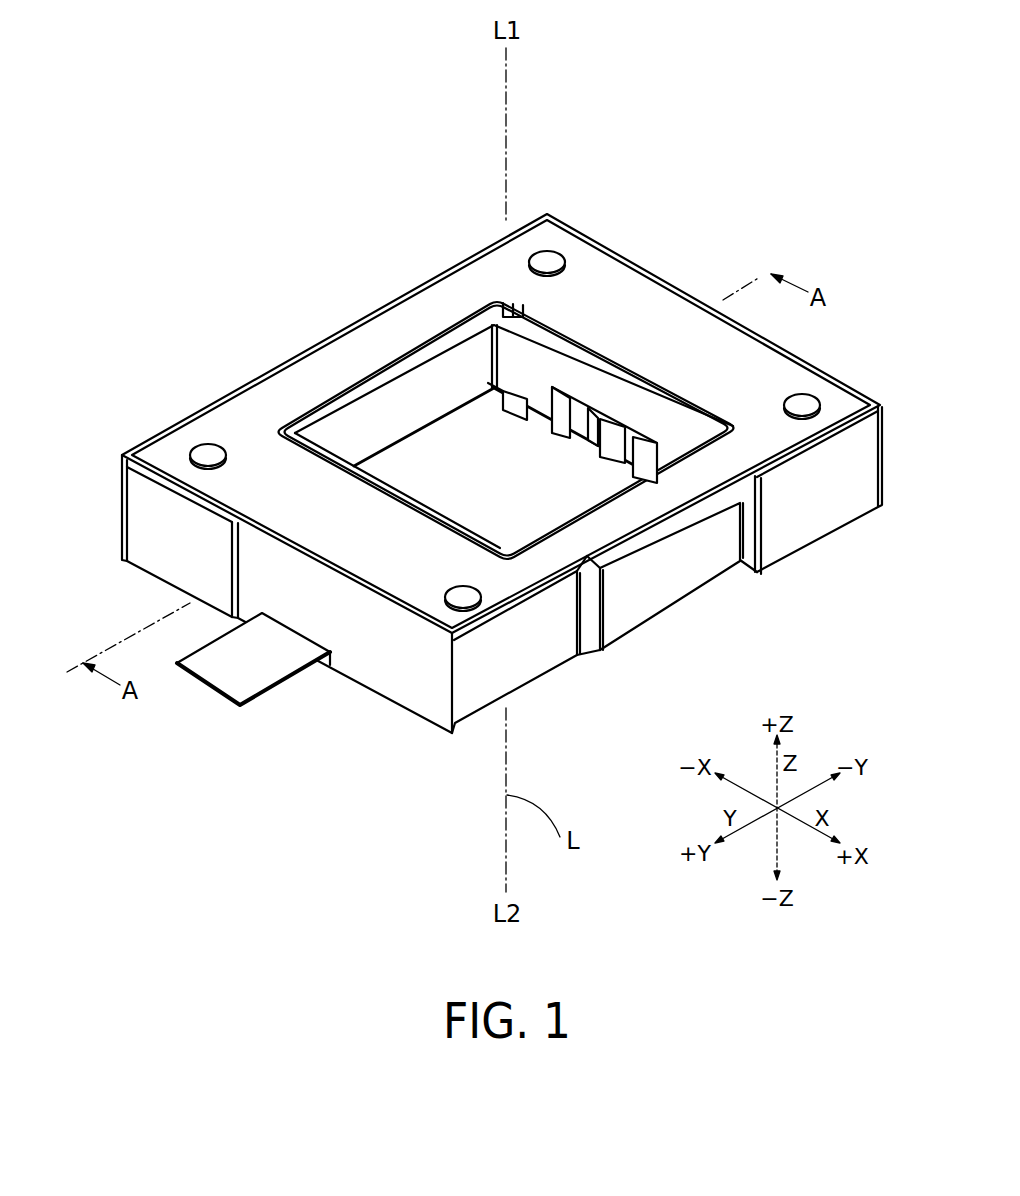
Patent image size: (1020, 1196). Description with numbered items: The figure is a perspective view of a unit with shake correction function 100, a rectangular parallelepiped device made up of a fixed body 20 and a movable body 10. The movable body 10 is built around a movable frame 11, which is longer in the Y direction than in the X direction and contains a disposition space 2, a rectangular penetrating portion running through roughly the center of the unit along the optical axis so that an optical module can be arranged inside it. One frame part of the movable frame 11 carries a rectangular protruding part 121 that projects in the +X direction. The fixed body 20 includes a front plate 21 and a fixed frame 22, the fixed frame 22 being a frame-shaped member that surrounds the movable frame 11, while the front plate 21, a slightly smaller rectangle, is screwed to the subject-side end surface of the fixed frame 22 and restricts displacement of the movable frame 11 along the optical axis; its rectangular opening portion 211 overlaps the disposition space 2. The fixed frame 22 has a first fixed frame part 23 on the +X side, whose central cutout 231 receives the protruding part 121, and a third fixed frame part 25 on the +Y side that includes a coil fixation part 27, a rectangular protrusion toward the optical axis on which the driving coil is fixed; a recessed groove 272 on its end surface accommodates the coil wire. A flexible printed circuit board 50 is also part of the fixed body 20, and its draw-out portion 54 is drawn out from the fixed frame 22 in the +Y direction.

The unit with shake correction function 100 is at (492, 460).
The movable body 10 is at (435, 488).
The movable frame 11 is at (345, 435).
The protruding part 121 is at (678, 597).
The disposition space 2 is at (506, 389).
The fixed body 20 is at (502, 460).
The front plate 21 is at (597, 272).
The fixed frame 22 is at (672, 288).
The opening portion 211 is at (447, 333).
The first fixed frame part 23 is at (532, 680).
The cutout 231 is at (578, 622).
The third fixed frame part 25 is at (388, 680).
The coil fixation part 27 is at (577, 436).
The recessed groove 272 is at (599, 456).
The flexible printed circuit board 50 is at (253, 708).
The draw-out portion 54 is at (260, 678).